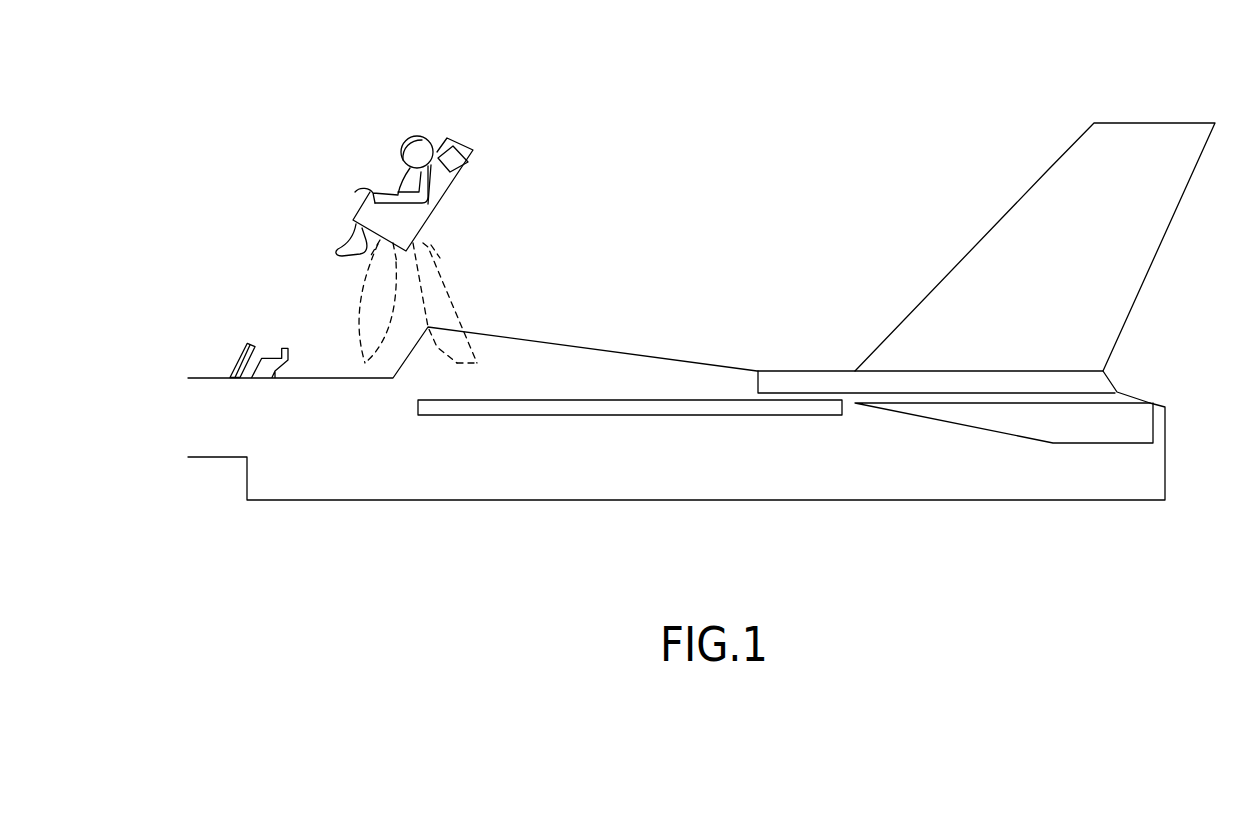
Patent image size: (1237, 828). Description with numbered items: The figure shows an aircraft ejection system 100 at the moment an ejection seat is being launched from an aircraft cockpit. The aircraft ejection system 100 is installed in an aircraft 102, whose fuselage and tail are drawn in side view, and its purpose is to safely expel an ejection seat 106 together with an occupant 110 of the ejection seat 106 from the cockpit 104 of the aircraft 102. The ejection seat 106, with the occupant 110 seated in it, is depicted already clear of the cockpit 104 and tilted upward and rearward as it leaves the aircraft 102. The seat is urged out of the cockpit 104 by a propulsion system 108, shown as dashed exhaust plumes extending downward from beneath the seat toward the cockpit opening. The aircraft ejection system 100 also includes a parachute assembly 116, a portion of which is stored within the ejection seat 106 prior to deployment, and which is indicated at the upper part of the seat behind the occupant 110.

The aircraft ejection system 100 is at (590, 215).
The aircraft 102 is at (713, 462).
The cockpit 104 is at (312, 362).
The ejection seat 106 is at (410, 220).
The propulsion system 108 is at (437, 278).
The occupant 110 is at (412, 135).
The parachute assembly 116 is at (480, 134).